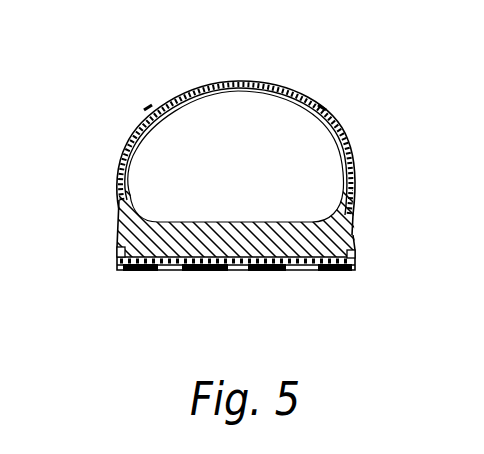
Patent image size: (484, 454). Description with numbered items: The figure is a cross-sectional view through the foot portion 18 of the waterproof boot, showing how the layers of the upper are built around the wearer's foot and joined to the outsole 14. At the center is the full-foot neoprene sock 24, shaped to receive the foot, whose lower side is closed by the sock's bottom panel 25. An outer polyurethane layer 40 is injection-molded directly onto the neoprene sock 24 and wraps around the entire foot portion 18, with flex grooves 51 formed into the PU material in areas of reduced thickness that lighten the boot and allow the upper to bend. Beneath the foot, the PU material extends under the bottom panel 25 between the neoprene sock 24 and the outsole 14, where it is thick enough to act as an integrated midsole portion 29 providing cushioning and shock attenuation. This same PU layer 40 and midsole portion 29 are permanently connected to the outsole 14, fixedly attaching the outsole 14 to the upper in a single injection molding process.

The flex grooves 51 is at (237, 82).
The outer polyurethane layer 40 is at (327, 112).
The neoprene sock 24 is at (336, 183).
The foot portion 18 is at (117, 185).
The bottom panel 25 is at (205, 223).
The outsole 14 is at (262, 262).
The integrated midsole portion 29 is at (290, 240).